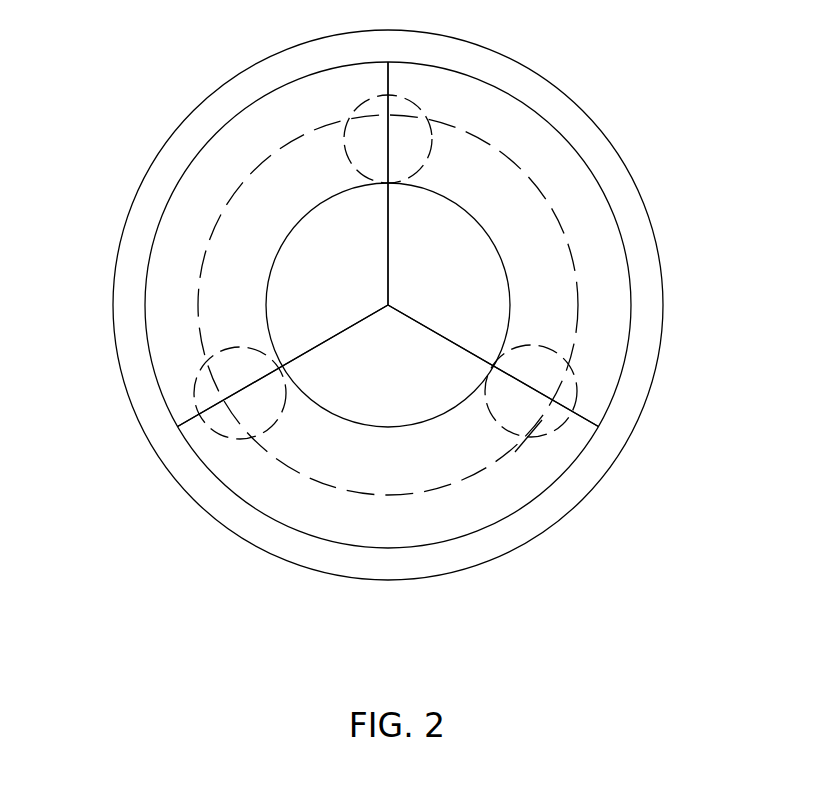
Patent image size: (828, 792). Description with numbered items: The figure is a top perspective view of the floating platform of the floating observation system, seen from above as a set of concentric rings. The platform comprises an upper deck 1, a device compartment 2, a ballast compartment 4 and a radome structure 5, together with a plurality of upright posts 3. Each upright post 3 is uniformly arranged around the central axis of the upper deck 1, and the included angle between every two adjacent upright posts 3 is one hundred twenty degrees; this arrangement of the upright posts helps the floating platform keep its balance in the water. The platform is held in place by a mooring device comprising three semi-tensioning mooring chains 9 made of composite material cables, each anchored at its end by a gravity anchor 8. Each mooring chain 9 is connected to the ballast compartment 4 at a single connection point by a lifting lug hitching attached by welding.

The upper deck 1 is at (575, 155).
The device compartment 2 is at (647, 212).
The upright posts 3 is at (575, 390).
The ballast compartment 4 is at (225, 212).
The radome structure 5 is at (265, 297).
The gravity anchor 8 is at (388, 305).
The semi-tensioning mooring chains 9 is at (383, 233).